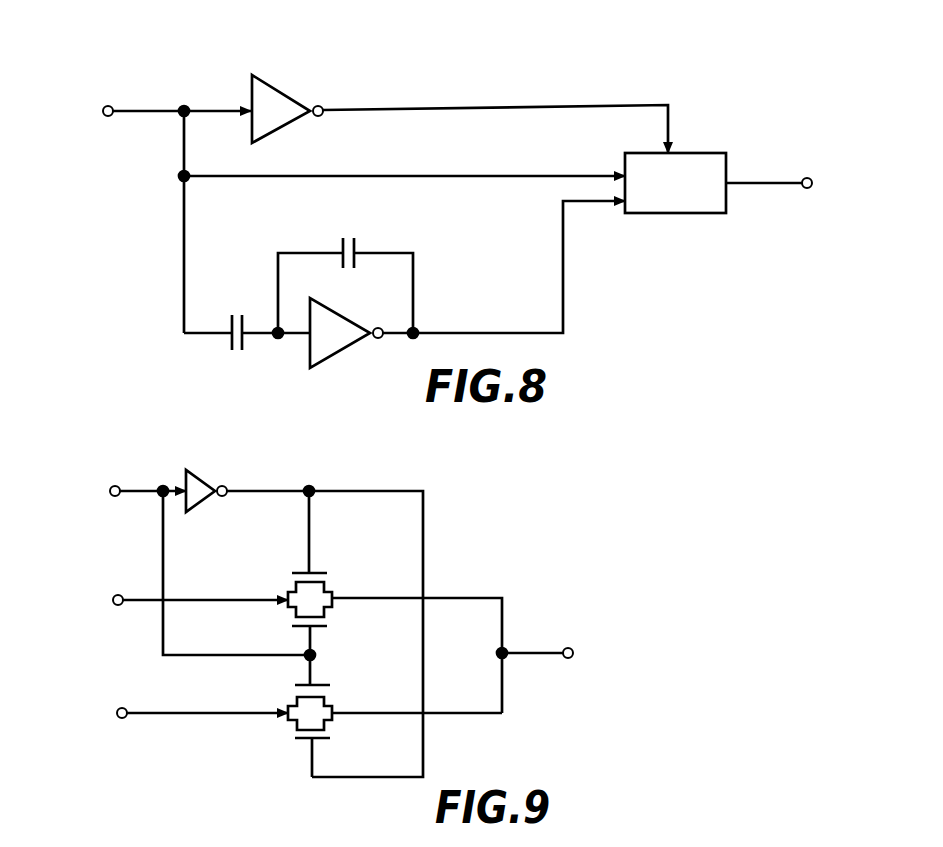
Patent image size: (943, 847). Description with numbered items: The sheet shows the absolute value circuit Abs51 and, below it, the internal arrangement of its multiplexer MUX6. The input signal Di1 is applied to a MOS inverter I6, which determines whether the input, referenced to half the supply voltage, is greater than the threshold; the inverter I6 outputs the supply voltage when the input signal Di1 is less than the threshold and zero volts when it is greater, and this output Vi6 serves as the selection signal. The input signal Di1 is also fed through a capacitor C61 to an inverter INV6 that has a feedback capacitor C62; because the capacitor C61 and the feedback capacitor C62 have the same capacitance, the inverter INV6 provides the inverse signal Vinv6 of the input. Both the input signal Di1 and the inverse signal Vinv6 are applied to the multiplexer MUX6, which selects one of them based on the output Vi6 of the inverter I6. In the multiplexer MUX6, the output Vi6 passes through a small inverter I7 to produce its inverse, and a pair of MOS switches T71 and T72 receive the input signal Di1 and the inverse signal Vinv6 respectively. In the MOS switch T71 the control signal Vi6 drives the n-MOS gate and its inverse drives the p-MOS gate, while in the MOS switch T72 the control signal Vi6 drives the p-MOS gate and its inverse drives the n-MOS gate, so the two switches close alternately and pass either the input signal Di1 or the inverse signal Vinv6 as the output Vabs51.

In FIG. 8, the input signal Di1 is at (341, 214).
In FIG. 9, the input signal Di1 is at (176, 600).
In FIG. 8, the MOS inverter I6 is at (298, 107).
In FIG. 8, the output of inverter I6 Vi6 is at (495, 115).
In FIG. 9, the output of inverter I6 Vi6 is at (185, 565).
In FIG. 8, the capacitor C61 is at (247, 313).
In FIG. 8, the feedback capacitor C62 is at (345, 270).
In FIG. 8, the inverter INV6 is at (355, 330).
In FIG. 8, the inverse signal Vinv6 is at (504, 269).
In FIG. 9, the inverse signal Vinv6 is at (160, 712).
In FIG. 8, the multiplexer MUX6 is at (675, 183).
In FIG. 9, the multiplexer MUX6 is at (617, 520).
In FIG. 8, the output of absolute value circuit Vabs51 is at (803, 164).
In FIG. 9, the output of absolute value circuit Vabs51 is at (500, 655).
In FIG. 8, the absolute value circuit Abs51 is at (698, 77).
In FIG. 9, the inverter I7 is at (304, 609).
In FIG. 9, the MOS switch T71 is at (322, 573).
In FIG. 9, the MOS switch T72 is at (385, 713).